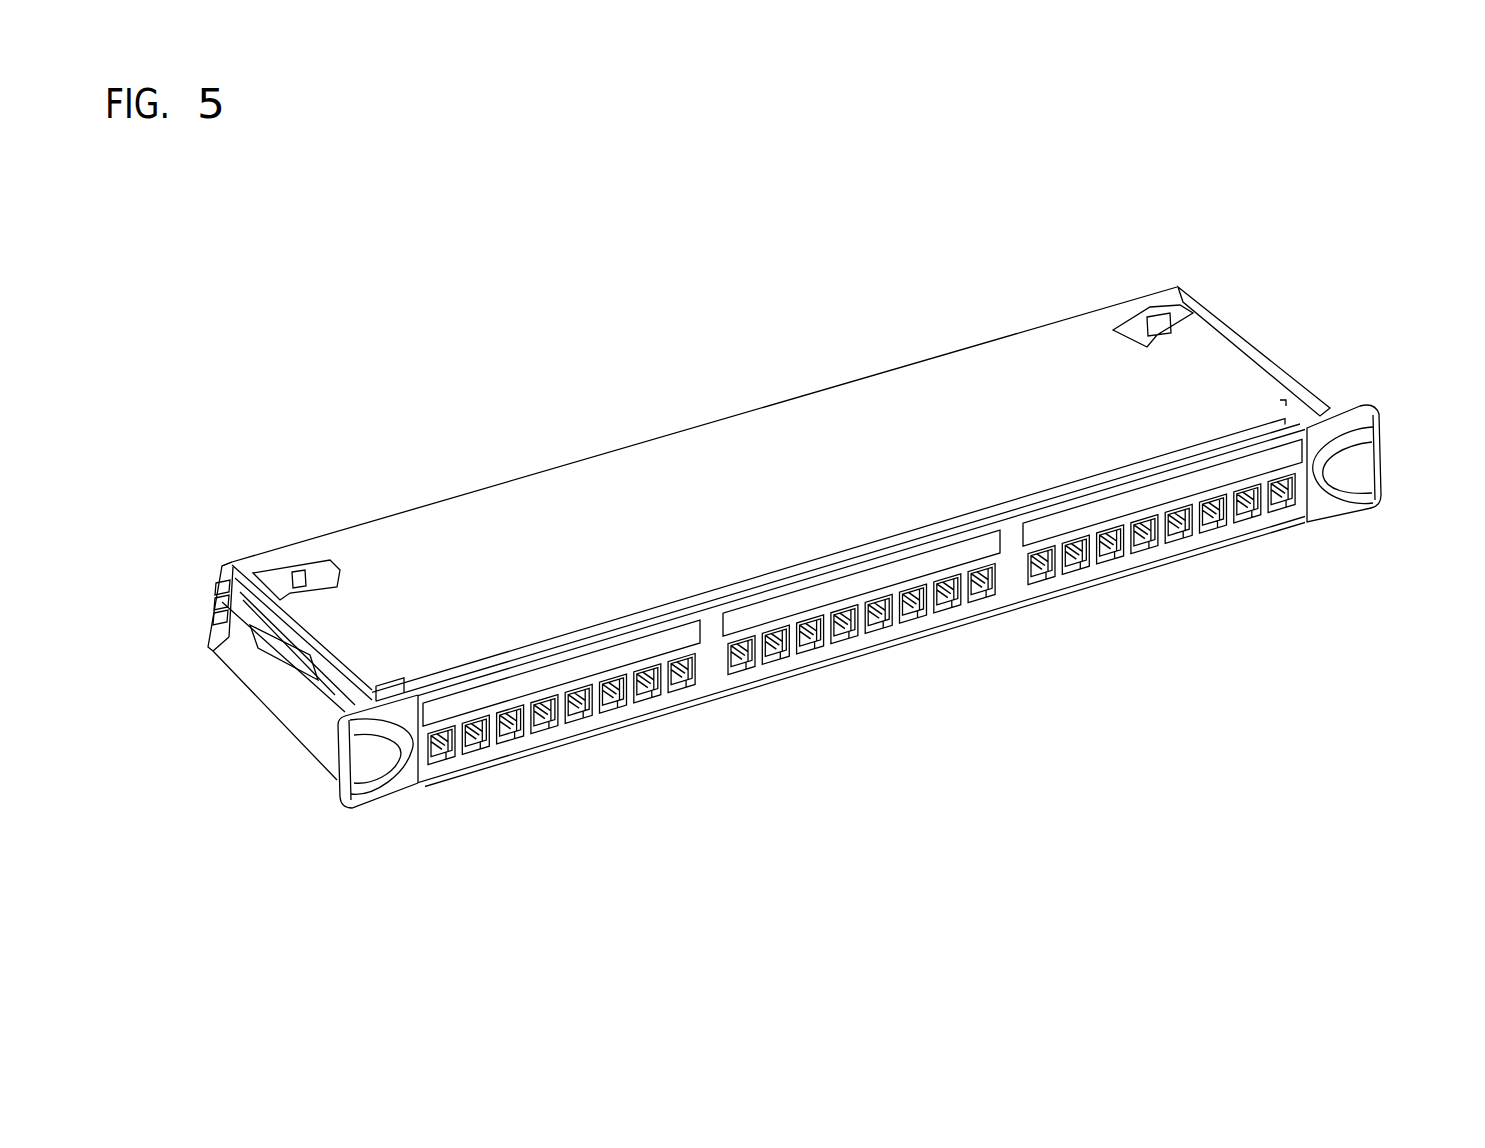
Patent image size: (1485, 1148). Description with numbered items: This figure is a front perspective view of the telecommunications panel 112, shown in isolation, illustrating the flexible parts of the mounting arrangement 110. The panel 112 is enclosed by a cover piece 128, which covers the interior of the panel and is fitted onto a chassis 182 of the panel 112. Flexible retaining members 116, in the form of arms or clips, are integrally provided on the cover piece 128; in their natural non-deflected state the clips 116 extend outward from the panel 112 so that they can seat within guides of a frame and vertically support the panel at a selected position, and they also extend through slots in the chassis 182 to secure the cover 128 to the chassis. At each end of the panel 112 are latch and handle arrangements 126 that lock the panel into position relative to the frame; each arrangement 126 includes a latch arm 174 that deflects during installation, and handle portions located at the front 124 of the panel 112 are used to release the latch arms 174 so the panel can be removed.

The mounting arrangement 110 is at (1090, 294).
The panel 112 is at (762, 715).
The flexible retaining members 116 is at (242, 628).
The front 124 is at (1020, 635).
The latch and handle arrangements 126 is at (1316, 552).
The cover piece 128 is at (708, 450).
The latch arm 174 is at (1363, 468).
The chassis 182 is at (1272, 334).